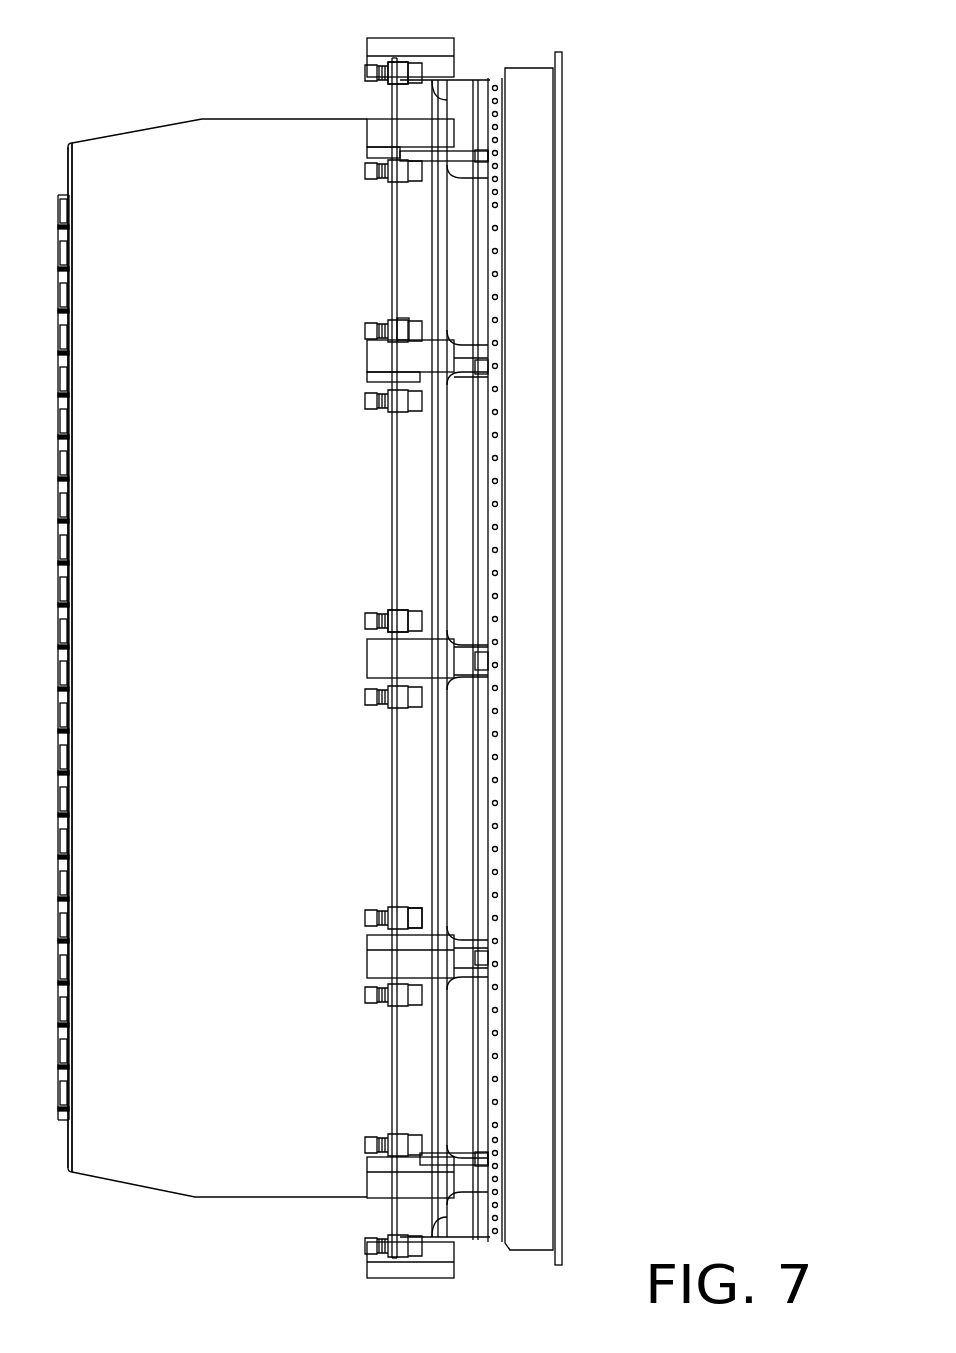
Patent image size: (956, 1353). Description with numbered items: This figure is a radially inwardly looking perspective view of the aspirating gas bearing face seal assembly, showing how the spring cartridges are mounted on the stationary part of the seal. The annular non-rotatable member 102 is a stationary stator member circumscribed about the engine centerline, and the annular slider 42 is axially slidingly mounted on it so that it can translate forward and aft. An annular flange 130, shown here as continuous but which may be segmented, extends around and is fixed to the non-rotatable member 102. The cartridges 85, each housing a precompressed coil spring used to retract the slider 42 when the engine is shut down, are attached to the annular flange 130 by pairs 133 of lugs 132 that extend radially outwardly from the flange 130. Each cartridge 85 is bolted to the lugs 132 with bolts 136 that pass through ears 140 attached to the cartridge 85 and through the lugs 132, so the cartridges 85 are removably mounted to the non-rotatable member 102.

The annular slider 42 is at (526, 68).
The cartridge 85 is at (427, 38).
The non-rotatable member 102 is at (233, 118).
The annular flange 130 is at (392, 258).
The lug 132 is at (400, 320).
The pairs of lugs 133 is at (403, 395).
The bolt 136 is at (413, 910).
The ear 140 is at (412, 86).